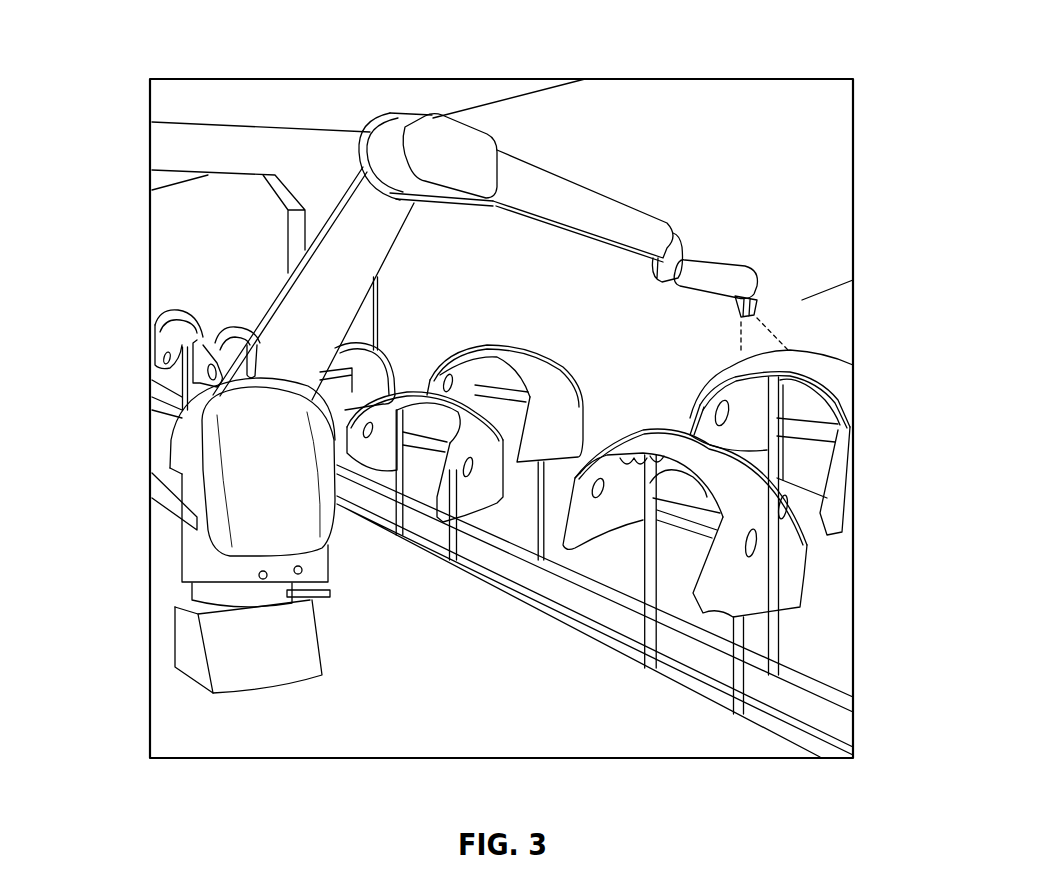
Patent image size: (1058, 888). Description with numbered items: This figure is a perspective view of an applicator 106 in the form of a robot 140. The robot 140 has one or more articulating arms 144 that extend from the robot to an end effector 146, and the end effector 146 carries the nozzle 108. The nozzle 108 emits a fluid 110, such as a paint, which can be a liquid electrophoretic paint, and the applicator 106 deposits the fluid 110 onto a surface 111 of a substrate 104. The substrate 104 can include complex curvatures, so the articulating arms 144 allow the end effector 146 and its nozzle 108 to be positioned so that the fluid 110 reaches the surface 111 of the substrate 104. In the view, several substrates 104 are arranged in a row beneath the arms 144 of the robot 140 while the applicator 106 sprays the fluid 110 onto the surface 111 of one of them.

The substrate 104 is at (845, 400).
The applicator 106 is at (561, 350).
The nozzle 108 is at (760, 303).
The fluid 110 is at (777, 330).
The surface 111 is at (827, 368).
The robot 140 is at (142, 342).
The articulating arm 144 is at (337, 207).
The end effector 146 is at (718, 261).